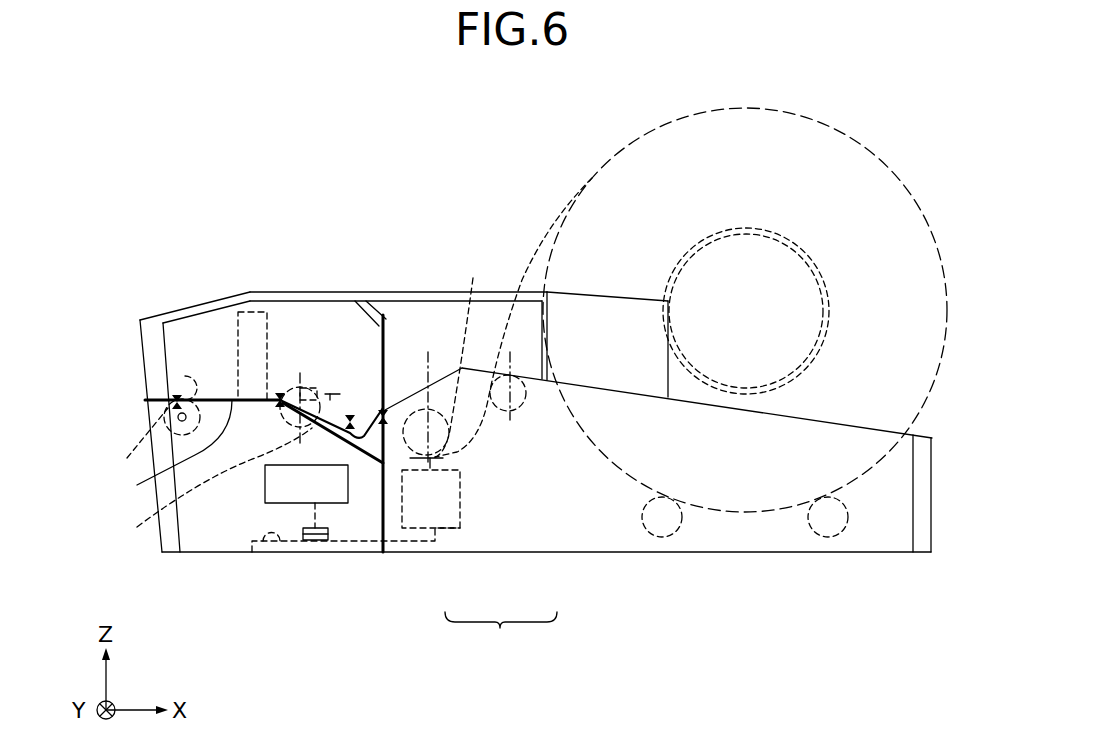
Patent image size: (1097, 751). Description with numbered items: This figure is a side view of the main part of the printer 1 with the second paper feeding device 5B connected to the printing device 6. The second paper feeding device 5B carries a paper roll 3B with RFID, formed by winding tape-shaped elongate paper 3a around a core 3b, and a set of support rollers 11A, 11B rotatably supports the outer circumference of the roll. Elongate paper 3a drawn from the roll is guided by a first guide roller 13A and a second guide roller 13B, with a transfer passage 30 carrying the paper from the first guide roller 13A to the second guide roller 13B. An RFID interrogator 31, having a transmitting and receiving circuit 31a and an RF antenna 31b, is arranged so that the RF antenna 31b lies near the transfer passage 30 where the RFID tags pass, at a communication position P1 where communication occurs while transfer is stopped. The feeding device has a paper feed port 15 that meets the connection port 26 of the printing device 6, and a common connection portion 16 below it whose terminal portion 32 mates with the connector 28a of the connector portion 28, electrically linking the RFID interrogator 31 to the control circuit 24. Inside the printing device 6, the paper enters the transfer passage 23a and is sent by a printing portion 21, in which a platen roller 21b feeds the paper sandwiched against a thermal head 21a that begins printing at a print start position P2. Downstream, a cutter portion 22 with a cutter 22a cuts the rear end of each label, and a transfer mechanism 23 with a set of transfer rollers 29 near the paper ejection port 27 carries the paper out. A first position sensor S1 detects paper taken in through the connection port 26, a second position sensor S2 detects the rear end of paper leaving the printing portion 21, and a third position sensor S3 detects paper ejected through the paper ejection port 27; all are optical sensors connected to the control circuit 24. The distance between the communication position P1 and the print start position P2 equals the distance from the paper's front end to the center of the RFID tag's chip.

The printer 1 is at (890, 584).
The elongate paper 3a is at (514, 290).
The core 3b is at (753, 228).
The paper roll with RFID 3B is at (852, 138).
The second paper feeding device 5B is at (735, 552).
The printing device 6 is at (195, 537).
The support roller 11A is at (661, 537).
The support roller 11B is at (829, 537).
The first guide roller 13A is at (508, 375).
The second guide roller 13B is at (430, 409).
The paper feed port 15 is at (392, 413).
The common connection portion 16 is at (303, 541).
The printing portion 21 is at (298, 347).
The thermal head 21a is at (320, 388).
The platen roller 21b is at (204, 488).
The cutter portion 22 is at (246, 312).
The cutter 22a is at (250, 378).
The transfer mechanism 23 is at (197, 355).
The transfer passage 23a is at (165, 454).
The control circuit 24 is at (278, 487).
The connection port 26 is at (373, 404).
The paper ejection port 27 is at (130, 396).
The connector portion 28 is at (267, 545).
The connector 28a is at (329, 533).
The transfer rollers 29 is at (131, 440).
The transfer passage 30 is at (470, 437).
The RFID interrogator 31 is at (479, 564).
The transmitting and receiving circuit 31a is at (455, 500).
The RF antenna 31b is at (460, 470).
The terminal portion 32 is at (322, 542).
The communication position P1 is at (473, 267).
The print start position P2 is at (308, 388).
The first position sensor S1 is at (357, 393).
The second position sensor S2 is at (278, 368).
The third position sensor S3 is at (177, 370).